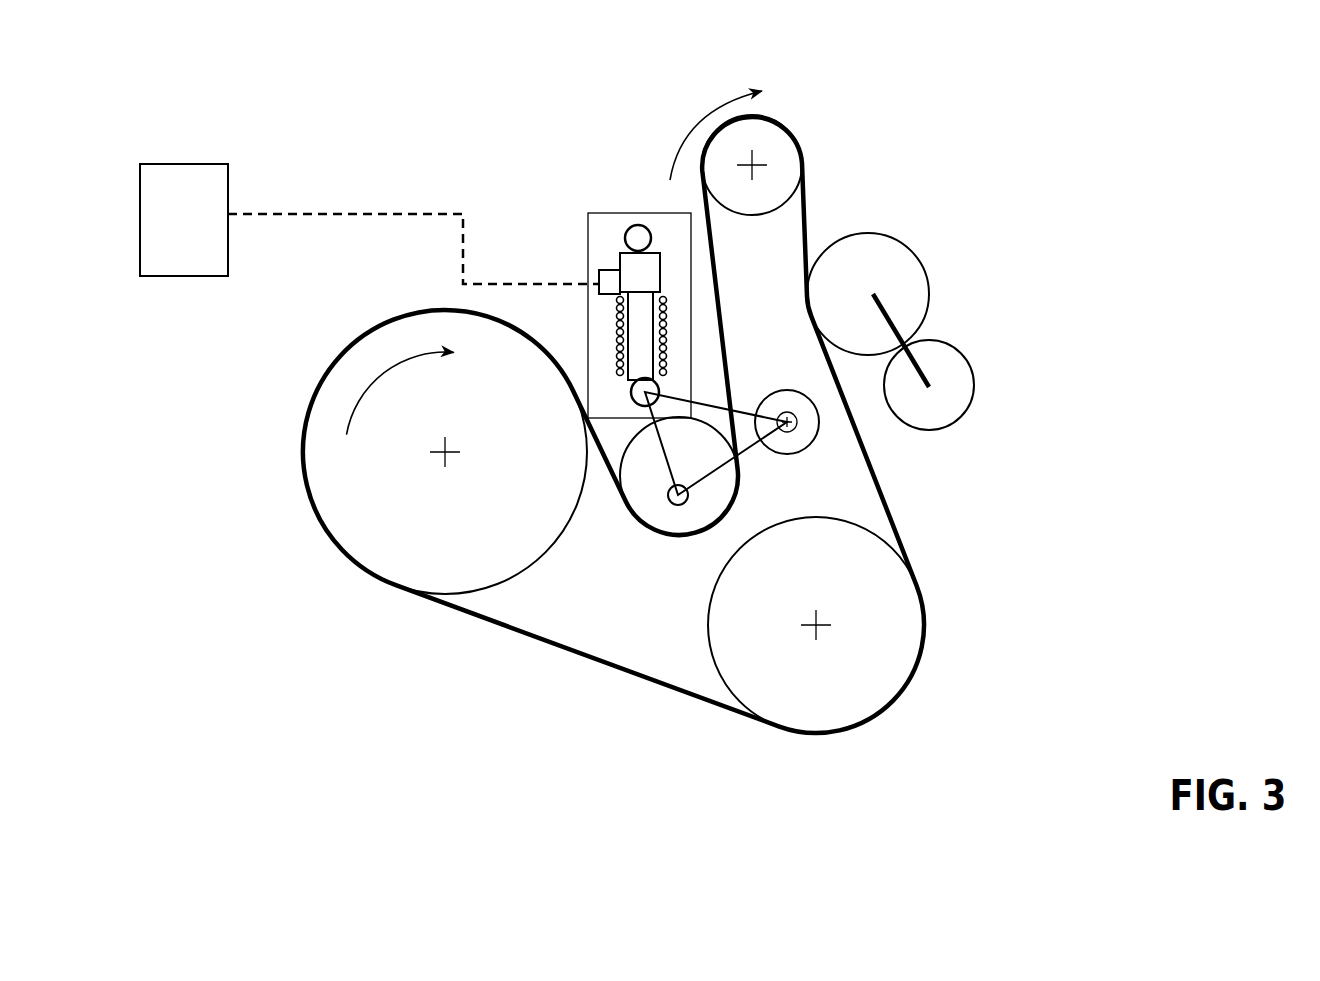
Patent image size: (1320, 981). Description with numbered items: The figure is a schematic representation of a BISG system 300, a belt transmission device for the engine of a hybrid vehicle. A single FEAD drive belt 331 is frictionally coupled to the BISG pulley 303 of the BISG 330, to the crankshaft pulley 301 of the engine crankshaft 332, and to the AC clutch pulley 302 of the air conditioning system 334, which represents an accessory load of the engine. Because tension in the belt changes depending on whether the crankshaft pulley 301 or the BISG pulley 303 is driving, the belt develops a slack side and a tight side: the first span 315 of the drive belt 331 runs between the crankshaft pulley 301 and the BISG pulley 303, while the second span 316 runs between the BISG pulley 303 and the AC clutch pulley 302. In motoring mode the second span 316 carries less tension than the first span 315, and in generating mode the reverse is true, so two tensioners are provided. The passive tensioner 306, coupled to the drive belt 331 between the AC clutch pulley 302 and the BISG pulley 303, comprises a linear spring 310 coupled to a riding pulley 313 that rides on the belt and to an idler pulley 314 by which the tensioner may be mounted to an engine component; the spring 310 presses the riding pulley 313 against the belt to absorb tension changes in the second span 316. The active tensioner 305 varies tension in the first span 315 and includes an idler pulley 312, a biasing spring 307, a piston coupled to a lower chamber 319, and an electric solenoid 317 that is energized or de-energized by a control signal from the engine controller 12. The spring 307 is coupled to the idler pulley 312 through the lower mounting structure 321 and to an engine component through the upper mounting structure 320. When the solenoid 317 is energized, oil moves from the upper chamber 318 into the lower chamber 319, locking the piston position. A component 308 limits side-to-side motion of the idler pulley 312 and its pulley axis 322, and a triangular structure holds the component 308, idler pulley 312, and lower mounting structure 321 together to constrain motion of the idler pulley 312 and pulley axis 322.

The engine controller 12 is at (166, 224).
The BISG system 300 is at (1150, 78).
The crankshaft pulley 301 is at (422, 571).
The AC clutch pulley 302 is at (798, 704).
The BISG pulley 303 is at (731, 208).
The active tensioner 305 is at (596, 213).
The passive tensioner 306 is at (1025, 232).
The spring 307 is at (665, 322).
The component 308 is at (797, 444).
The linear spring 310 is at (892, 318).
The idler pulley 312 is at (670, 518).
The riding pulley 313 is at (913, 250).
The idler pulley 314 is at (968, 356).
The first span 315 is at (717, 273).
The second span 316 is at (893, 478).
The electric solenoid 317 is at (600, 272).
The upper chamber 318 is at (660, 250).
The lower chamber 319 is at (630, 325).
The upper mounting structure 320 is at (640, 223).
The mounting structure 321 is at (627, 387).
The pulley axis 322 is at (687, 505).
The BISG 330 is at (806, 104).
The FEAD drive belt 331 is at (540, 648).
The engine crankshaft 332 is at (308, 520).
The air conditioning system 334 is at (947, 650).